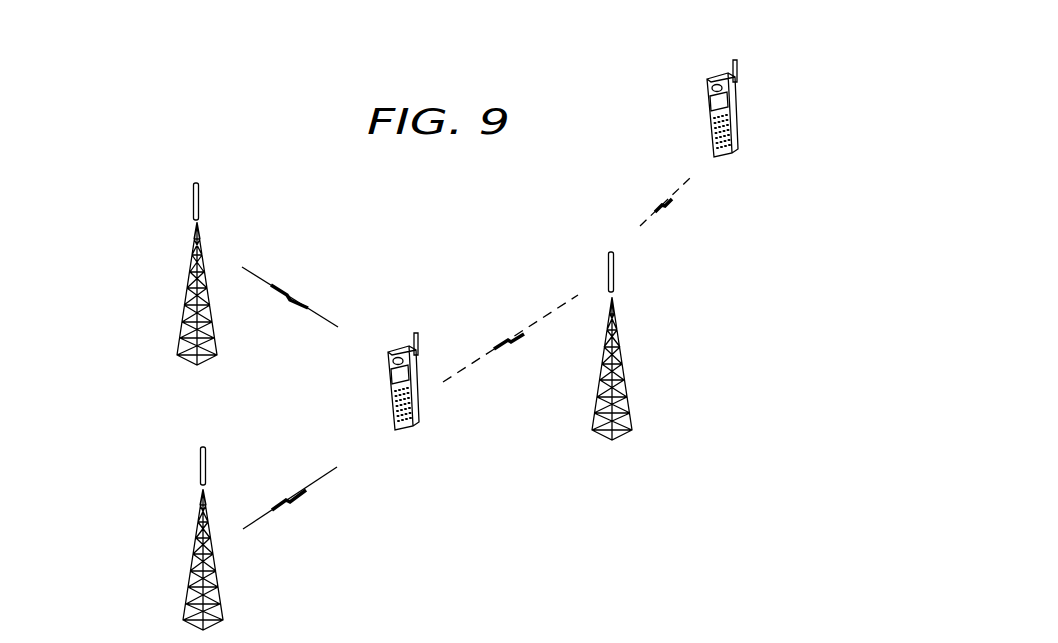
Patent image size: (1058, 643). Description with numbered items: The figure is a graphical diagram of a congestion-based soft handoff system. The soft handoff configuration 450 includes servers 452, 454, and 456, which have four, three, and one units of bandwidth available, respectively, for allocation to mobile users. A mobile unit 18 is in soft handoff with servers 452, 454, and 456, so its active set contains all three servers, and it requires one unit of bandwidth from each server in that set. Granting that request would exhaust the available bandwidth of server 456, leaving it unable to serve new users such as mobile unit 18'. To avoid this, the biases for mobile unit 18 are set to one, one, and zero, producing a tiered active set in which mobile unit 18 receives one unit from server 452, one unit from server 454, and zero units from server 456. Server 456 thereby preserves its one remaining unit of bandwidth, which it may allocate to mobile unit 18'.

The soft handoff configuration 450 is at (117, 213).
The server 452 is at (199, 204).
The server 454 is at (206, 468).
The server 456 is at (614, 273).
The mobile unit 18 is at (636, 453).
The mobile unit 18' is at (776, 111).